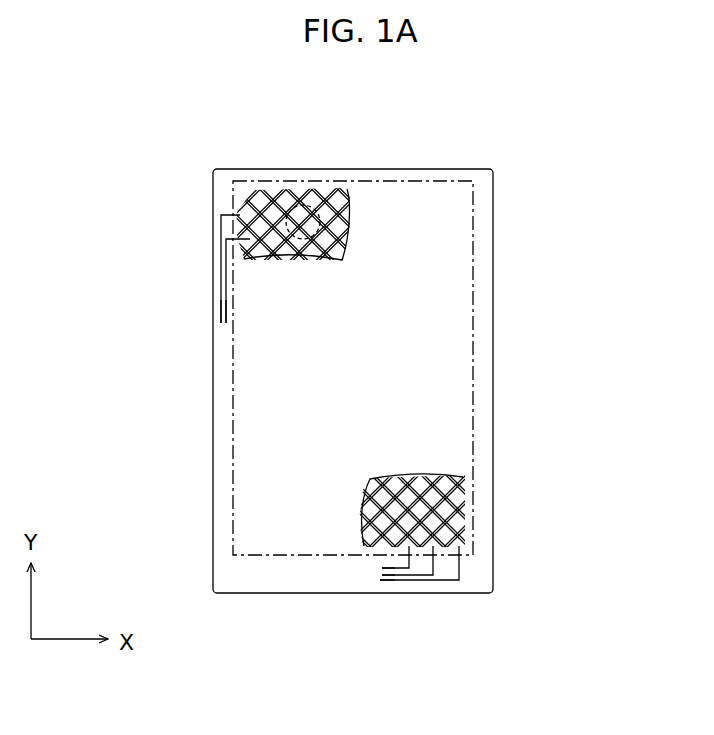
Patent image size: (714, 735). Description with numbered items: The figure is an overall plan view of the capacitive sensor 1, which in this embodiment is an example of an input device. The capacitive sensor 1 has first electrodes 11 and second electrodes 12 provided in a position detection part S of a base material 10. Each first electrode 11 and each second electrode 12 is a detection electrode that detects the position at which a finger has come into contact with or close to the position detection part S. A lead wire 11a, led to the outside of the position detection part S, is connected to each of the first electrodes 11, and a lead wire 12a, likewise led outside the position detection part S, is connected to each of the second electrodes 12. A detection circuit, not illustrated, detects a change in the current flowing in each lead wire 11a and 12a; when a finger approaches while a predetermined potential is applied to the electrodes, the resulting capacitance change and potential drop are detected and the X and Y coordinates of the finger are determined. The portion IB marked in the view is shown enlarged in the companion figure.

The capacitive sensor 1 is at (527, 148).
The base material 10 is at (493, 415).
The position detection part S is at (473, 326).
The first electrode 11 is at (247, 208).
The lead wire 11a is at (221, 252).
The second electrode 12 is at (262, 192).
The lead wire 12a is at (388, 572).
The portion IB is at (310, 198).